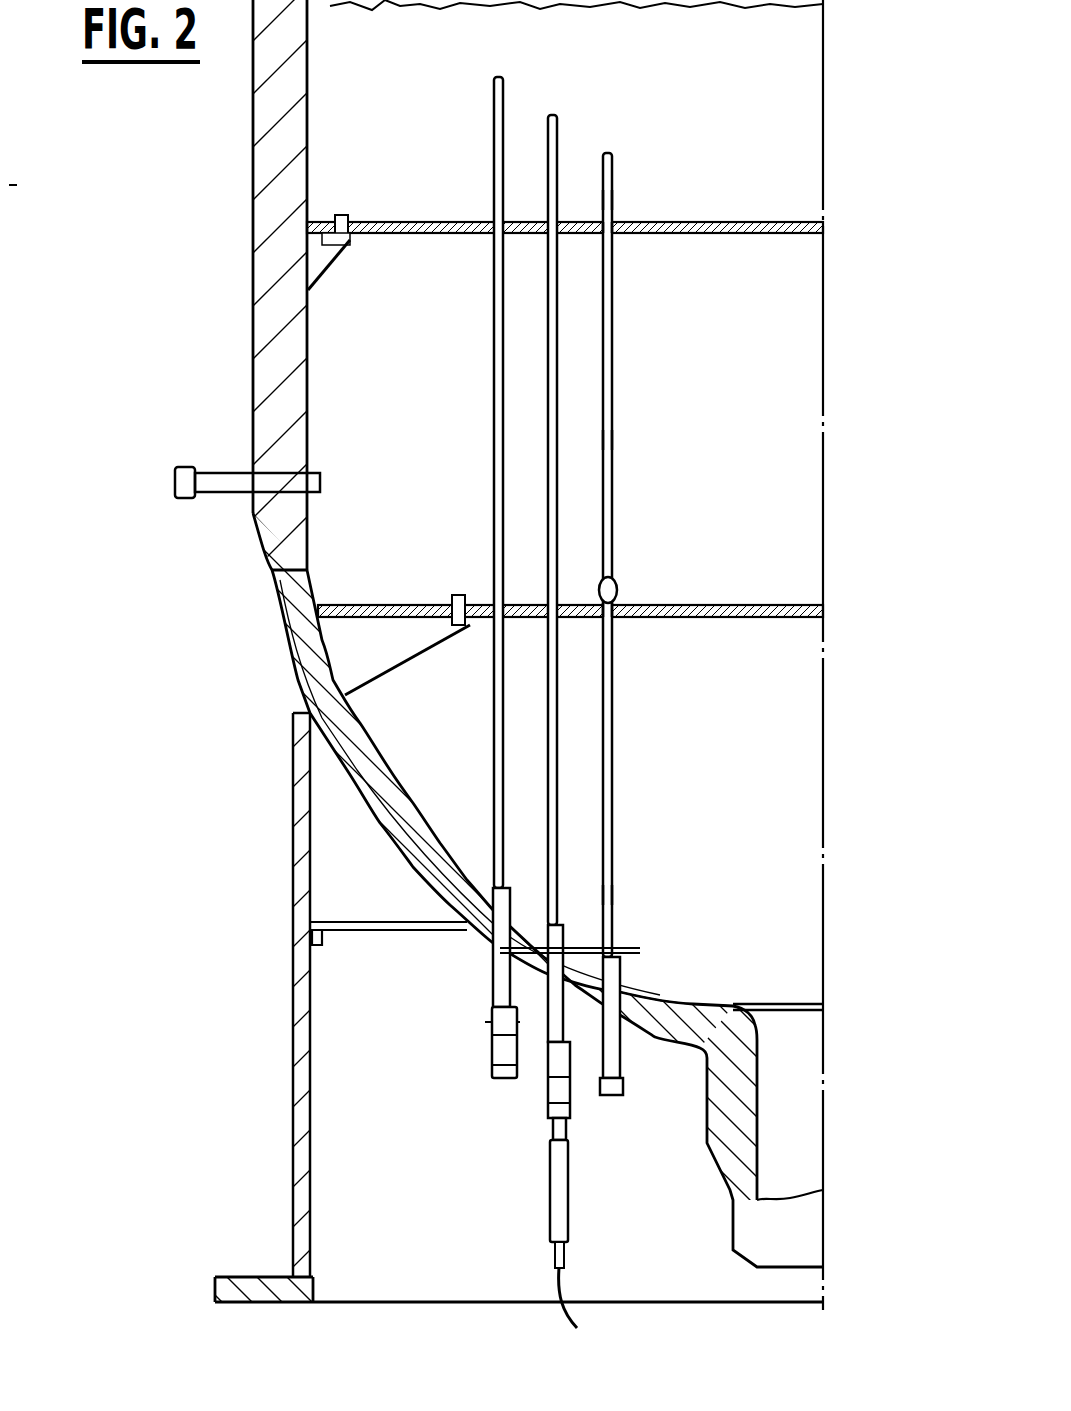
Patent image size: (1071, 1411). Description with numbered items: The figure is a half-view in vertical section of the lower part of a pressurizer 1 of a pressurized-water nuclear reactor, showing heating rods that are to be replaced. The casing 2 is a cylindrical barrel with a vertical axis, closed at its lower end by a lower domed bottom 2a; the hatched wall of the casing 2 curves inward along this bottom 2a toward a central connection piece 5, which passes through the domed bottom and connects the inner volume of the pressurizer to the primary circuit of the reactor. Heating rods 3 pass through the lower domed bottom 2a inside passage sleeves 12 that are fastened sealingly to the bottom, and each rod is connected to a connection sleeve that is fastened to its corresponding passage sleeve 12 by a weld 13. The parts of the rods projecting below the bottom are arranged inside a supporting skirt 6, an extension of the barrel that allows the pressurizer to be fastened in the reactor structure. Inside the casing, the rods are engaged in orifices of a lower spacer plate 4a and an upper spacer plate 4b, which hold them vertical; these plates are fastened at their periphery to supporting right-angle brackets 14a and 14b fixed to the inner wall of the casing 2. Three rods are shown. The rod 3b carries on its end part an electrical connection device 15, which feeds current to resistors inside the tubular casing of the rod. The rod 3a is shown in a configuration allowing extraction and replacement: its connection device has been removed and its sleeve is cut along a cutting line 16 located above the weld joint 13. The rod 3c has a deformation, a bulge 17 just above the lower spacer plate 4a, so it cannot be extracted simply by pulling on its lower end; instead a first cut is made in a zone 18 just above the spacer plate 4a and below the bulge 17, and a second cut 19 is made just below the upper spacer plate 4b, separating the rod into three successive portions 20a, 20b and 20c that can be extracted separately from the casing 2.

The pressurizer 1 is at (241, 391).
The casing 2 is at (262, 114).
The lower domed bottom 2a is at (400, 835).
The heating rods 3 is at (503, 107).
The heating rod 3a is at (492, 860).
The heating rod 3b is at (560, 780).
The heating rod 3c is at (612, 845).
The lower spacer plate 4a is at (378, 603).
The upper spacer plate 4b is at (398, 222).
The connection piece 5 is at (716, 1140).
The supporting skirt 6 is at (300, 1180).
The passage sleeves 12 is at (605, 983).
The weld 13 is at (495, 1035).
The supporting right-angle bracket 14a is at (385, 658).
The supporting right-angle bracket 14b is at (332, 258).
The electrical connection device 15 is at (551, 1200).
The cutting line 16 is at (492, 1022).
The bulge 17 is at (612, 585).
The zone of first cut 18 is at (618, 604).
The second cut 19 is at (612, 233).
The rod portion 20a is at (612, 893).
The rod portion 20b is at (612, 440).
The rod portion 20c is at (612, 200).